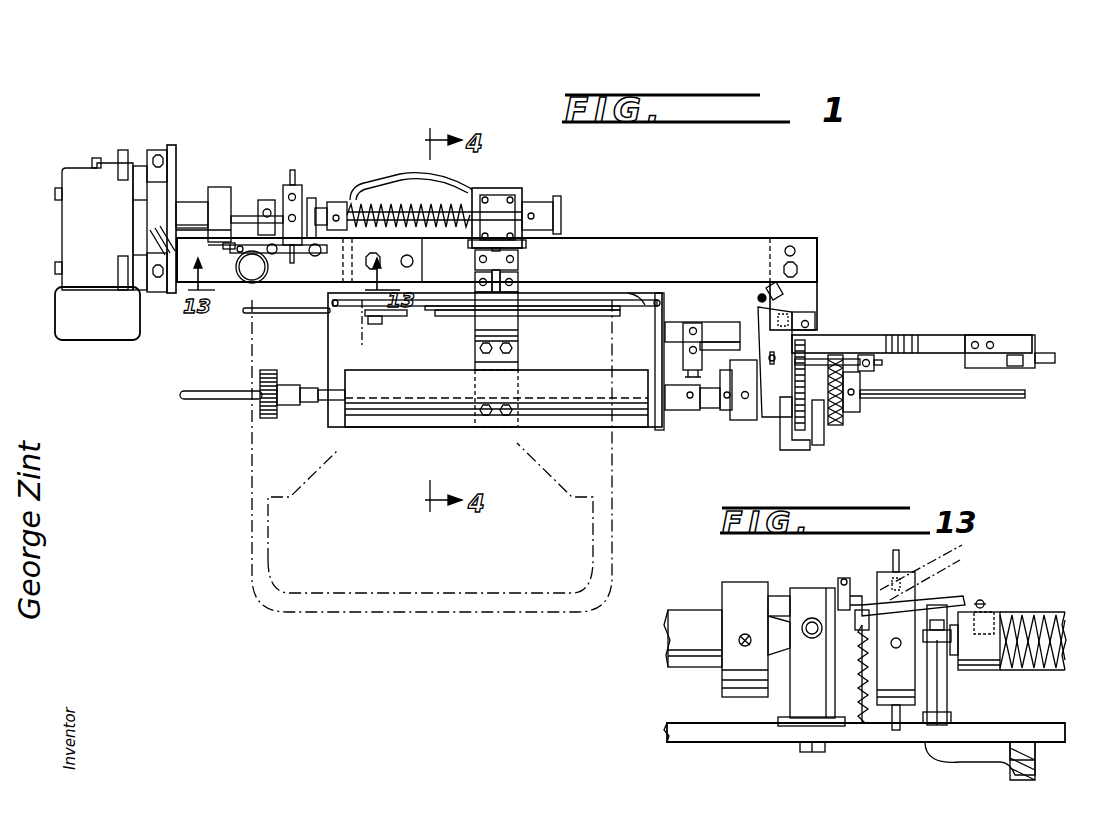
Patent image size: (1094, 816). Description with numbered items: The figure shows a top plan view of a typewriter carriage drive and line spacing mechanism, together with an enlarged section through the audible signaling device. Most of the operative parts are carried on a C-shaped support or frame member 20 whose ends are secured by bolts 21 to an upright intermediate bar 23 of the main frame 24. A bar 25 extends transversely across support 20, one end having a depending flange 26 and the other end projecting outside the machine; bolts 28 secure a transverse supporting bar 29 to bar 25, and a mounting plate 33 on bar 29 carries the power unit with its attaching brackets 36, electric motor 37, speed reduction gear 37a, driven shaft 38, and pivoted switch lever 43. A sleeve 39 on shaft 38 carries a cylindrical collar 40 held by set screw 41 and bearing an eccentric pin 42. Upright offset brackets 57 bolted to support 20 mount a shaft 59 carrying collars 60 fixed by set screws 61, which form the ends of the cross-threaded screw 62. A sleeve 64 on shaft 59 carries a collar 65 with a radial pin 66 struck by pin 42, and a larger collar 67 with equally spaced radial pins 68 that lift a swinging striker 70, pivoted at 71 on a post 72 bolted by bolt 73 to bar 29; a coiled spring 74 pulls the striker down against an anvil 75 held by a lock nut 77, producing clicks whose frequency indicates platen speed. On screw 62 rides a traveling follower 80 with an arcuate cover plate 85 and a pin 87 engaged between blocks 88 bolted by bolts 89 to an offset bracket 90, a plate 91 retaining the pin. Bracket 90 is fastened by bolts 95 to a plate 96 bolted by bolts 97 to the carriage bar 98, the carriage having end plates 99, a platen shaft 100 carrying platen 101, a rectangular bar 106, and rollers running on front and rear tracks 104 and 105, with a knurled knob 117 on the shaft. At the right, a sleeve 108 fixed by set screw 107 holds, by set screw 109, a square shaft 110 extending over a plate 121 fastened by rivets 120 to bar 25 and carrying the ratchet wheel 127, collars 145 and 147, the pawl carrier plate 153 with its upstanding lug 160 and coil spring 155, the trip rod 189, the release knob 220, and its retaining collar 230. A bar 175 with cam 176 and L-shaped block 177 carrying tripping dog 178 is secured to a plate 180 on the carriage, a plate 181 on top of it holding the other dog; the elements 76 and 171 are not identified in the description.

In FIG. 1, the C-shaped support or frame member 20 is at (402, 178).
In FIG. 13, the C-shaped support or frame member 20 is at (1010, 775).
In FIG. 1, the bolts 21 is at (376, 324).
In FIG. 1, the upright intermediate bar or flange 23 is at (375, 318).
In FIG. 1, the main frame 24 is at (252, 518).
In FIG. 1, the plate or bar 25 is at (626, 250).
In FIG. 13, the plate or bar 25 is at (1050, 748).
In FIG. 1, the depending flange 26 is at (338, 260).
In FIG. 1, the bolts 28 is at (413, 261).
In FIG. 13, the transversely extending supporting bar or member 29 is at (1000, 725).
In FIG. 1, the mounting plate 33 is at (172, 158).
In FIG. 1, the attaching brackets 36 is at (157, 292).
In FIG. 1, the constant speed electric motor 37 is at (62, 310).
In FIG. 1, the speed reduction gear 37a is at (70, 244).
In FIG. 1, the constant speed driven shaft 38 is at (150, 160).
In FIG. 1, the sleeve 39 is at (190, 207).
In FIG. 13, the sleeve 39 is at (682, 618).
In FIG. 1, the cylindrical collar 40 is at (220, 190).
In FIG. 13, the cylindrical collar 40 is at (736, 590).
In FIG. 1, the set screw 41 is at (232, 250).
In FIG. 13, the set screw 41 is at (745, 634).
In FIG. 1, the pin 42 is at (245, 215).
In FIG. 13, the pin 42 is at (782, 596).
In FIG. 1, the pivoted operating lever 43 is at (150, 246).
In FIG. 1, the upright offset brackets 57 is at (312, 200).
In FIG. 13, the upright offset brackets 57 is at (955, 758).
In FIG. 1, the shaft 59 is at (310, 205).
In FIG. 13, the shaft 59 is at (945, 672).
In FIG. 1, the collars 60 is at (338, 203).
In FIG. 13, the collars 60 is at (995, 615).
In FIG. 13, the set screws 61 is at (985, 600).
In FIG. 1, the cylindrical member with cross screw threads 62 is at (430, 206).
In FIG. 13, the cylindrical member with cross screw threads 62 is at (1040, 618).
In FIG. 1, the sleeve 64 is at (293, 185).
In FIG. 1, the collar 65 is at (268, 200).
In FIG. 13, the collar 65 is at (845, 675).
In FIG. 1, the radially extending pin 66 is at (263, 209).
In FIG. 13, the radially extending pin 66 is at (843, 578).
In FIG. 1, the collar 67 is at (300, 190).
In FIG. 13, the collar 67 is at (860, 723).
In FIG. 1, the radial pins 68 is at (293, 170).
In FIG. 13, the radial pins 68 is at (893, 558).
In FIG. 13, the swinging striker 70 is at (962, 548).
In FIG. 13, the pivot 71 is at (808, 638).
In FIG. 1, the post 72 is at (248, 282).
In FIG. 13, the post 72 is at (795, 708).
In FIG. 13, the bolt 73 is at (808, 752).
In FIG. 13, the coiled spring 74 is at (856, 720).
In FIG. 13, the anvil or sounding member 75 is at (945, 630).
In FIG. 1, the bar 76 is at (300, 252).
In FIG. 13, the bar 76 is at (946, 697).
In FIG. 13, the lock nut 77 is at (951, 720).
In FIG. 1, the traveling nut member or follower 80 is at (520, 188).
In FIG. 1, the arcuate cover plate 85 is at (497, 198).
In FIG. 1, the pin 87 is at (518, 275).
In FIG. 1, the blocks 88 is at (518, 284).
In FIG. 1, the bolts 89 is at (513, 281).
In FIG. 1, the offset bracket 90 is at (500, 313).
In FIG. 1, the transversely extending plate 91 is at (513, 260).
In FIG. 1, the bolts 95 is at (513, 348).
In FIG. 1, the forwardly and rearwardly extending plate 96 is at (510, 368).
In FIG. 1, the bolts 97 is at (483, 418).
In FIG. 1, the bar 98 is at (410, 420).
In FIG. 1, the upright end plates 99 is at (658, 340).
In FIG. 1, the axle or shaft 100 is at (322, 402).
In FIG. 1, the typewriter platen 101 is at (380, 405).
In FIG. 1, the front cylindrical track 104 is at (200, 396).
In FIG. 1, the rear cylindrical track 105 is at (278, 314).
In FIG. 1, the rectangular bar 106 is at (644, 308).
In FIG. 1, the set screw 107 is at (672, 410).
In FIG. 1, the sleeve 108 is at (690, 410).
In FIG. 1, the set screw 109 is at (690, 400).
In FIG. 1, the square shaft 110 is at (998, 397).
In FIG. 1, the knurled knob 117 is at (265, 412).
In FIG. 1, the bolts or rivets 120 is at (792, 246).
In FIG. 1, the plate 121 is at (808, 294).
In FIG. 1, the ratchet wheel 127 is at (795, 383).
In FIG. 1, the outer collar 145 is at (725, 410).
In FIG. 1, the second collar 147 is at (742, 420).
In FIG. 1, the flat plate or bar 153 is at (765, 320).
In FIG. 1, the coil spring 155 is at (765, 290).
In FIG. 1, the upstanding lug 160 is at (783, 450).
In FIG. 1, the block 171 is at (812, 312).
In FIG. 1, the bar 175 is at (948, 342).
In FIG. 1, the reciprocating cam 176 is at (890, 338).
In FIG. 1, the L-shaped block 177 is at (1012, 340).
In FIG. 1, the tripping dog 178 is at (1010, 366).
In FIG. 1, the plate 180 is at (712, 322).
In FIG. 1, the plate 181 is at (693, 323).
In FIG. 1, the spring pressed rod 189 is at (875, 363).
In FIG. 1, the knurled knob 220 is at (836, 426).
In FIG. 1, the collar 230 is at (855, 412).